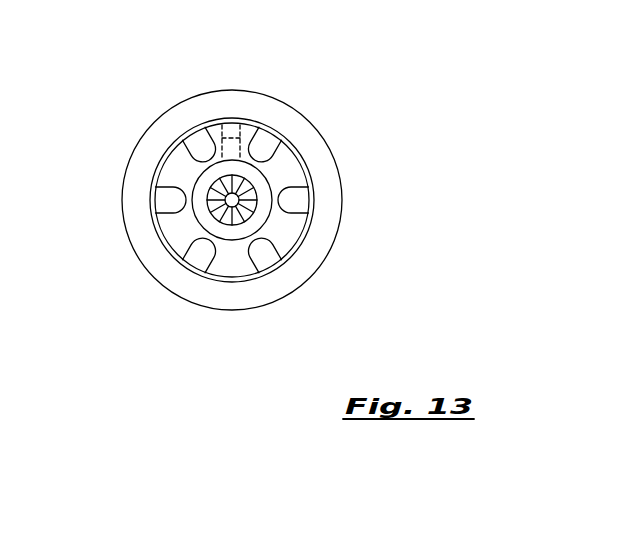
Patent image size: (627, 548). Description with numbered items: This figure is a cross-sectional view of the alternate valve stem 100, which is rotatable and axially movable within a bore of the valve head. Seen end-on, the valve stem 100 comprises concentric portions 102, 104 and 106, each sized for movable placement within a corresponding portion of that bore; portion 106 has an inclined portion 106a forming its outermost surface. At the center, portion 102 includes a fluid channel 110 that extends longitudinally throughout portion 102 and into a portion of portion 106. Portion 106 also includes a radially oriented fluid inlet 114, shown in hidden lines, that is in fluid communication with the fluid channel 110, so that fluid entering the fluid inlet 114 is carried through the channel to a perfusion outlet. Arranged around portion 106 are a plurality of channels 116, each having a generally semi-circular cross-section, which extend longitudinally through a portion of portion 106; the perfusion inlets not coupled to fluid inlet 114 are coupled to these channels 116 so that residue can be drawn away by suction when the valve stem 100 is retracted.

The valve stem 100 is at (430, 211).
The portion 102 is at (250, 208).
The portion 104 is at (190, 202).
The portion 106 is at (180, 172).
The inclined portion 106a is at (231, 94).
The fluid channel 110 is at (232, 202).
The fluid inlet 114 is at (238, 131).
The channels 116 is at (195, 142).